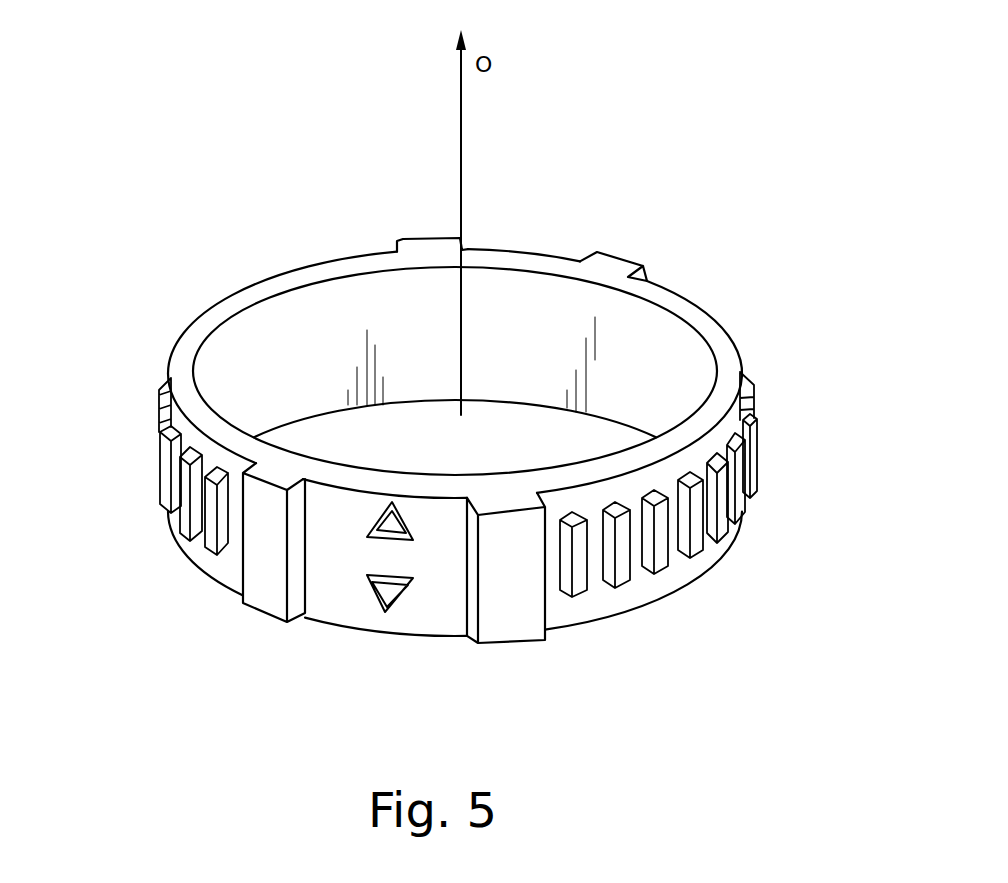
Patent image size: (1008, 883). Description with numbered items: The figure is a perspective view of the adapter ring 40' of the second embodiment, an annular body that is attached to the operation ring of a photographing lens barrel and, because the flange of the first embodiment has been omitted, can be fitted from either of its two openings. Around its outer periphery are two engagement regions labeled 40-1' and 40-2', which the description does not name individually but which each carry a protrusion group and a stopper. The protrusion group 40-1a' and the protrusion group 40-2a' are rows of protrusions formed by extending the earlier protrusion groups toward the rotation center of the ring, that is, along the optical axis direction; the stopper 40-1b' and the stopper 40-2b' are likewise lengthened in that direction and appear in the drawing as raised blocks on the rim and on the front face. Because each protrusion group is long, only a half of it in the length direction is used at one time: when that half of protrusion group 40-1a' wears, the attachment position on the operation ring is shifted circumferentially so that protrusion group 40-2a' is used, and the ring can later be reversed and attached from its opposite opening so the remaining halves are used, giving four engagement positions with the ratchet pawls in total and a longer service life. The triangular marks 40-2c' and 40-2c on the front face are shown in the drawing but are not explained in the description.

The adapter ring 40' is at (530, 407).
The first ring member 40-1' is at (113, 364).
The protrusion group 40-1a' is at (150, 529).
The stopper 40-1b' is at (327, 426).
The second ring member 40-2' is at (823, 379).
The protrusion group 40-2a' is at (713, 510).
The stopper 40-2b' is at (578, 439).
The upward triangular mark 40-2c' is at (314, 379).
The downward triangular mark 40-2c is at (384, 649).